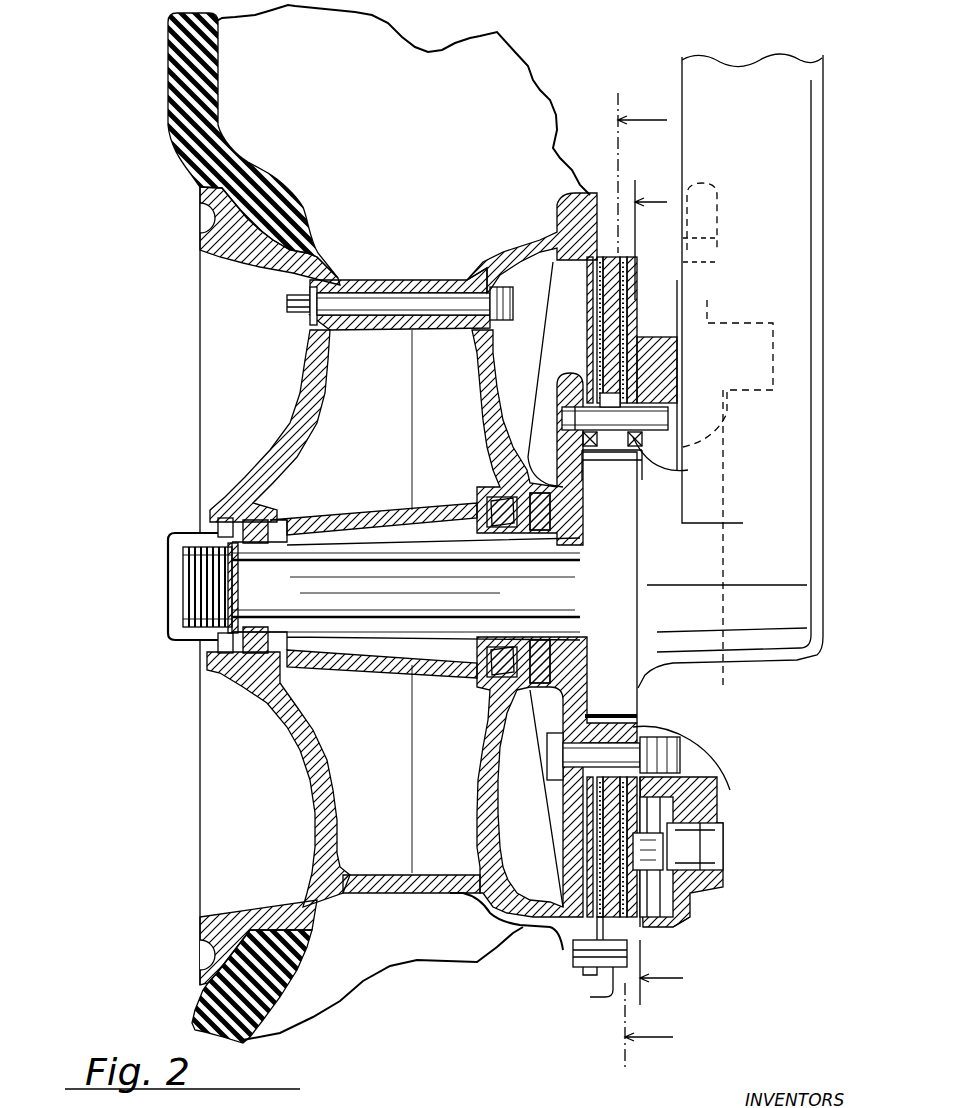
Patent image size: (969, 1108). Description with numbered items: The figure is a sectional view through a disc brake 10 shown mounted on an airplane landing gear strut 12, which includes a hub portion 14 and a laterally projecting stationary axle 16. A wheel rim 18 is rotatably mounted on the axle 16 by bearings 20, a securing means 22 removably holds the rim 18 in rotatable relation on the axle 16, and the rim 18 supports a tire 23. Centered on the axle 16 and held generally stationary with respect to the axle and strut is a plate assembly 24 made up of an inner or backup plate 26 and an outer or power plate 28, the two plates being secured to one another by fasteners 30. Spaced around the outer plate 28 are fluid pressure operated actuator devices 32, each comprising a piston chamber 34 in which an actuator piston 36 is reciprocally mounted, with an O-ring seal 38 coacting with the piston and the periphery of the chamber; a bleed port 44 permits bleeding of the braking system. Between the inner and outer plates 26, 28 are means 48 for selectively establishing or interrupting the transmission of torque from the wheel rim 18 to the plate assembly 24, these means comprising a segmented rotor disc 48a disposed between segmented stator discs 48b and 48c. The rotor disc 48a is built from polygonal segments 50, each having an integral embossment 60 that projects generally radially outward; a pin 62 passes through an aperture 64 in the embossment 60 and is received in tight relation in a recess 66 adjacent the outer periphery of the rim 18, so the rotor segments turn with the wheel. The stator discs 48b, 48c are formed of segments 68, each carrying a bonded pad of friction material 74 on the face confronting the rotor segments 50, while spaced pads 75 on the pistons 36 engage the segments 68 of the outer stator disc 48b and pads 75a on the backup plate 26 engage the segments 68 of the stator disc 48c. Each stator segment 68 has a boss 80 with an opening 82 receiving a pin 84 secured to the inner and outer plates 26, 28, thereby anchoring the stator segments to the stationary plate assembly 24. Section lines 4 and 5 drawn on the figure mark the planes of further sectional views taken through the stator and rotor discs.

The disc brake 10 is at (524, 962).
The landing gear strut 12 is at (802, 125).
The hub portion 14 is at (633, 683).
The stationary axle 16 is at (393, 603).
The wheel rim 18 is at (307, 400).
The bearings 20 is at (495, 500).
The securing means 22 is at (175, 640).
The tire 23 is at (158, 97).
The plate assembly 24 is at (744, 802).
The inner backup plate 26 is at (560, 380).
The outer power plate 28 is at (707, 793).
The fasteners 30 is at (667, 740).
The fluid pressure operated actuator device 32 is at (711, 902).
The piston chamber 34 is at (693, 845).
The actuator piston 36 is at (683, 853).
The O-ring seal 38 is at (690, 913).
The bleed port 44 is at (720, 197).
The torque transmission means 48 is at (607, 232).
The segmented rotor disc 48a is at (627, 253).
The outer segmented stator disc 48b is at (640, 300).
The inner segmented stator disc 48c is at (590, 285).
The rotor segment 50 is at (617, 712).
The embossment 60 is at (613, 990).
The pin 62 is at (575, 915).
The aperture 64 is at (627, 947).
The recess 66 is at (583, 960).
The stator segment 68 is at (590, 320).
The pad of friction material 74 is at (623, 273).
The friction pads on piston 75 is at (700, 828).
The friction pads on backup plate 75a is at (593, 857).
The boss 80 is at (630, 455).
The opening 82 is at (595, 448).
The pin 84 is at (660, 410).
The section line 4- 4 is at (676, 586).
The section line 5- 5 is at (658, 576).